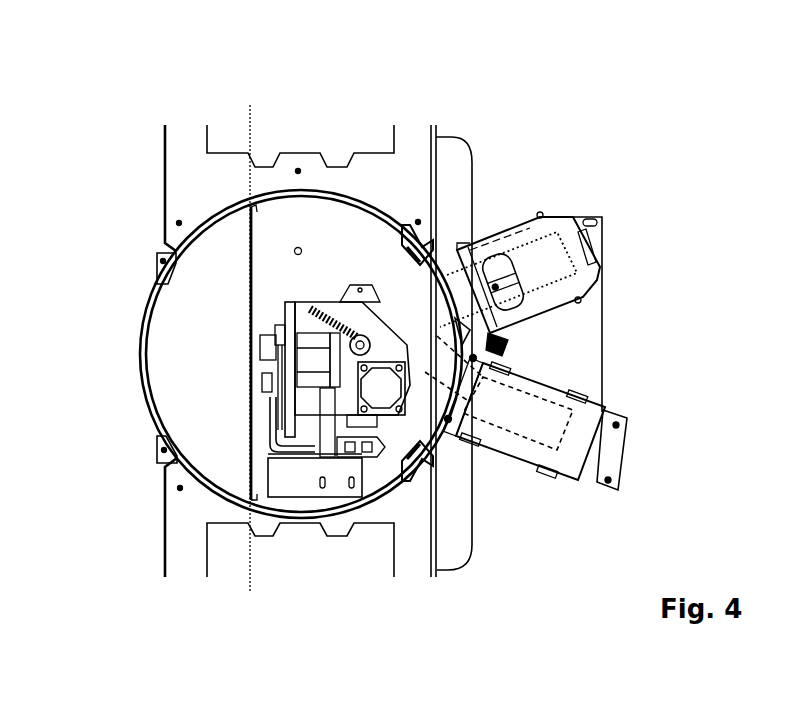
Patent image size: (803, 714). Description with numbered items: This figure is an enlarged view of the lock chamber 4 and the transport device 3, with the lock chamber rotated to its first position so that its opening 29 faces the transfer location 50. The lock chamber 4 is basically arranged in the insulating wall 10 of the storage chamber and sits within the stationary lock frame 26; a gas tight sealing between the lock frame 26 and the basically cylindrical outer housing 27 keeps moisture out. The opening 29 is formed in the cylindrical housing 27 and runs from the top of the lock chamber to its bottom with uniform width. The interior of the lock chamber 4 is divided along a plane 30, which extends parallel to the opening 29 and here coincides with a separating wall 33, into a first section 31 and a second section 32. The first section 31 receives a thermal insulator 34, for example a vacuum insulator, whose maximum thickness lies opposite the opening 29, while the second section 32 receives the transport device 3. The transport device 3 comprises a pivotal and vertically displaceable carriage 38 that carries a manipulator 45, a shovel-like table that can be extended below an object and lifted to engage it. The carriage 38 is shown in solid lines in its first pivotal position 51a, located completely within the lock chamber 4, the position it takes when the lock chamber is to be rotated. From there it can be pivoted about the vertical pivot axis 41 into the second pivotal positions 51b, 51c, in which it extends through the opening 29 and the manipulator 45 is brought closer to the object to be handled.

The transport device 3 is at (342, 175).
The lock chamber 4 is at (115, 353).
The insulating wall 10 is at (279, 362).
The lock frame 26 is at (125, 355).
The outer housing 27 is at (462, 360).
The opening 29 is at (482, 345).
The plane 30 is at (283, 340).
The first section 31 is at (132, 477).
The second section 32 is at (329, 521).
The separating wall 33 is at (253, 334).
The thermal insulator 34 is at (248, 354).
The carriage 38 is at (426, 489).
The pivot axis 41 is at (359, 273).
The manipulator 45 is at (458, 363).
The transfer location 50 is at (638, 314).
The first pivotal position 51a is at (282, 426).
The second pivotal position 51b is at (526, 448).
The second pivotal position 51c is at (522, 247).